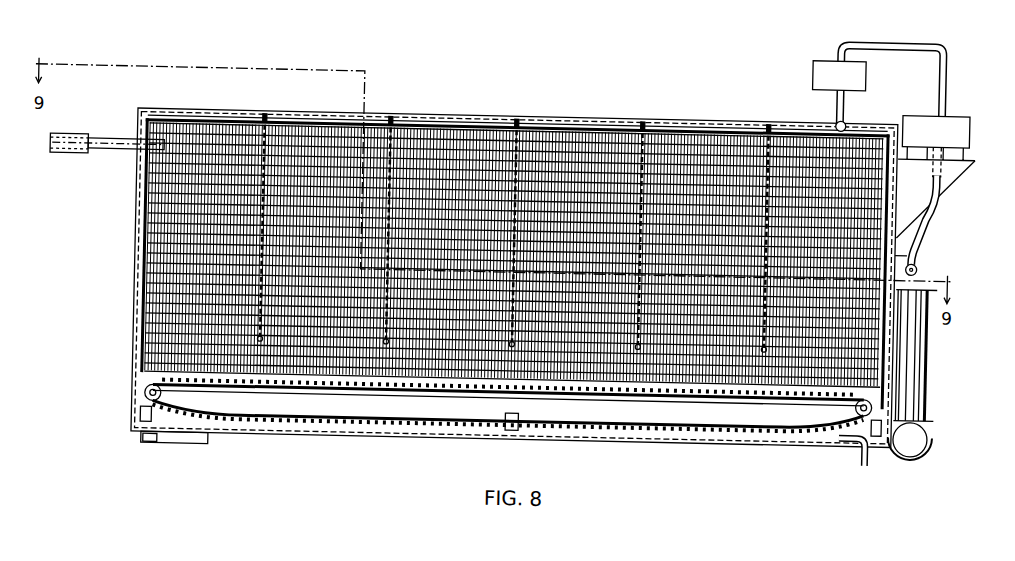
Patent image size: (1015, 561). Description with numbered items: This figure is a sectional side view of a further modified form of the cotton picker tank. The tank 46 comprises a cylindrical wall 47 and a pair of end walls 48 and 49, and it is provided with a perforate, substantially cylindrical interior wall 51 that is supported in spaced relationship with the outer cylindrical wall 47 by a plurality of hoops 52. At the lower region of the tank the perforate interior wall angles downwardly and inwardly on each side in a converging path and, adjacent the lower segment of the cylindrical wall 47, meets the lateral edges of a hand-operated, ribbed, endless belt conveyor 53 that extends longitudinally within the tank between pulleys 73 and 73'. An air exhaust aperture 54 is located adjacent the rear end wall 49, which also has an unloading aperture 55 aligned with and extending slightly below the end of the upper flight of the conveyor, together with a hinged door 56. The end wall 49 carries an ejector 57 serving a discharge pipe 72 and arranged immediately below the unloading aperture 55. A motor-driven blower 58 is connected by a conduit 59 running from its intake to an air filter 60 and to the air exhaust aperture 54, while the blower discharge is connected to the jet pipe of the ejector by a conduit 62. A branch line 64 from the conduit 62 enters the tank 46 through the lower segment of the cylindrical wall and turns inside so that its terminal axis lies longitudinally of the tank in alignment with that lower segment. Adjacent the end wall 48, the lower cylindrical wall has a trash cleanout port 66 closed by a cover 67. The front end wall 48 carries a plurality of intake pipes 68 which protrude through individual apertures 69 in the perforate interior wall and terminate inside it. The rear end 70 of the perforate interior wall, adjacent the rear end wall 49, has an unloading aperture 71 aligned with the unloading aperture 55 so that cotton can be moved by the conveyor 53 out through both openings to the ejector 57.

The tank 46 is at (515, 233).
The cylindrical wall 47 is at (518, 105).
The end wall 48 is at (492, 277).
The end wall 49 is at (923, 262).
The perforate interior wall 51 is at (518, 108).
The hoops 52 is at (498, 216).
The endless belt conveyor 53 is at (510, 429).
The air exhaust aperture 54 is at (855, 111).
The unloading aperture 55 is at (931, 356).
The hinged door 56 is at (937, 356).
The ejector 57 is at (946, 442).
The blower 58 is at (951, 178).
The conduit 59 is at (912, 81).
The air filter 60 is at (817, 75).
The conduit 62 is at (942, 206).
The branch line 64 is at (873, 461).
The trash cleanout port 66 is at (154, 453).
The cover 67 is at (174, 453).
The intake pipes 68 is at (106, 158).
The apertures 69 is at (122, 244).
The rear end 70 is at (928, 355).
The unloading aperture 71 is at (926, 272).
The discharge pipe 72 is at (946, 356).
The pulley 73 is at (171, 394).
The pulley 73' is at (845, 406).